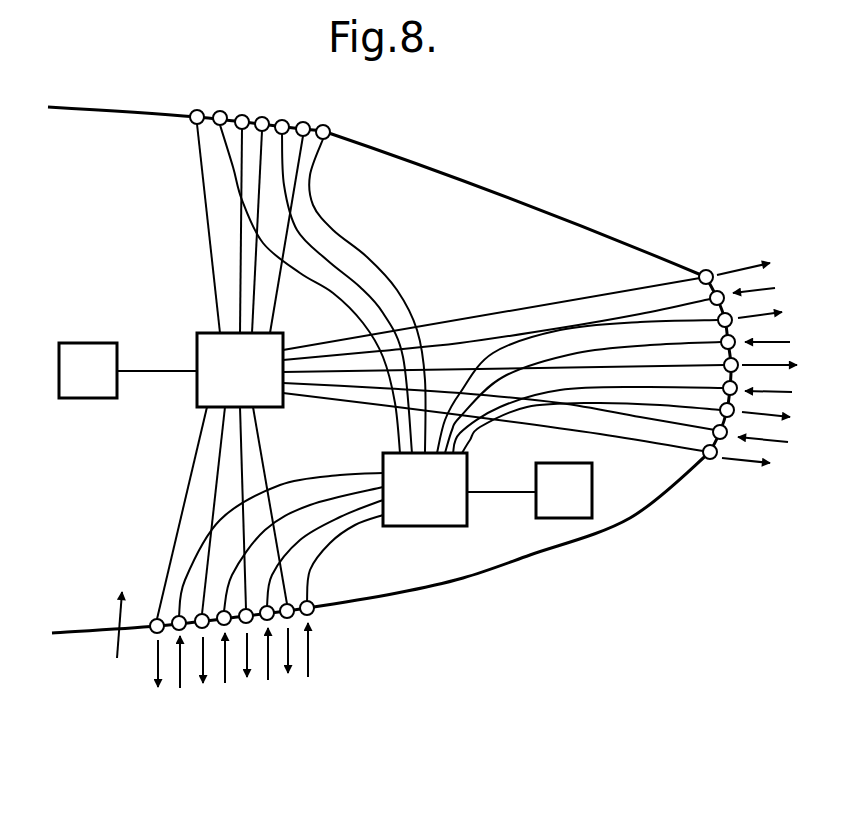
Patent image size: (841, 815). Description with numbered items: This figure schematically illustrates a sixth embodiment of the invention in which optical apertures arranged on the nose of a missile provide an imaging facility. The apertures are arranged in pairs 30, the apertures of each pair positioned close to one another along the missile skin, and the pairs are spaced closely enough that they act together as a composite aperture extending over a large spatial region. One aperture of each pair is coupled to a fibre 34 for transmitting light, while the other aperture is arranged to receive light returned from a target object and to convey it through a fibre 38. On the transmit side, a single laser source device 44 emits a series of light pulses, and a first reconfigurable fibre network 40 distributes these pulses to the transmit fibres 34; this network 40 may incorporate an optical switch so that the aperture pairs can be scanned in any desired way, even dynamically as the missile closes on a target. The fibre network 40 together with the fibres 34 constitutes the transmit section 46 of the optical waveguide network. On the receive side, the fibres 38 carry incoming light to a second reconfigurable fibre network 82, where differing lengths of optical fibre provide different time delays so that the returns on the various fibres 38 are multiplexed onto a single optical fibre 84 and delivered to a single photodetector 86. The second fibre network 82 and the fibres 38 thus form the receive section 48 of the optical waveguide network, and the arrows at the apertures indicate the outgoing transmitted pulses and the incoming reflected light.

The pairs of apertures 30 is at (263, 686).
The fibre 34 is at (217, 433).
The fibre 38 is at (333, 543).
The fibre network 40 is at (207, 340).
The laser source device 44 is at (72, 388).
The transmit section 46 is at (113, 639).
The receive section 48 is at (661, 513).
The second fibre network 82 is at (453, 518).
The single optical fibre 84 is at (518, 492).
The photodetector 86 is at (590, 500).